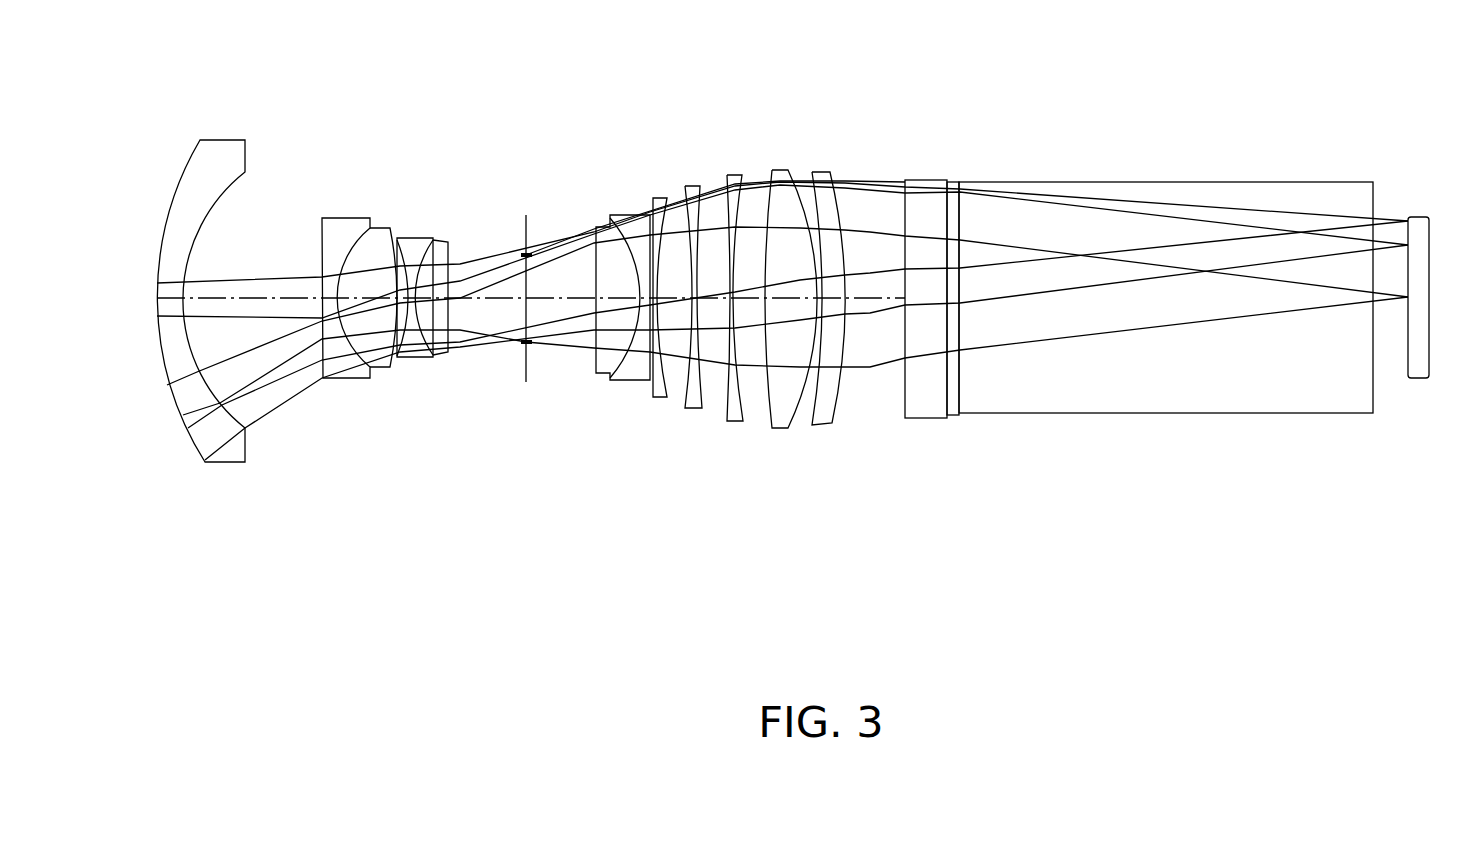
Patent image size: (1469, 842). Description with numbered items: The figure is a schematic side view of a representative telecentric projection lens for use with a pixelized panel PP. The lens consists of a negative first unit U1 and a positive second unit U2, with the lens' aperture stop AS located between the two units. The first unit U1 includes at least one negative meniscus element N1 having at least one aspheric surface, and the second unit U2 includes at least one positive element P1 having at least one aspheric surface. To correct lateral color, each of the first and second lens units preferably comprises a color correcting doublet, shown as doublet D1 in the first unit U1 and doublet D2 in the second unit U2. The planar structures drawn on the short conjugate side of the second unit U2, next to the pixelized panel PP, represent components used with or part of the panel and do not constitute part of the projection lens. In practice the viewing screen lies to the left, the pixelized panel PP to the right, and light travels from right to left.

The negative meniscus element N1 is at (213, 170).
The color correcting doublet D1 is at (396, 216).
The aperture stop AS is at (523, 233).
The color correcting doublet D2 is at (652, 198).
The positive element P1 is at (829, 168).
The pixelized panel PP is at (1440, 245).
The first unit U1 is at (470, 463).
The second unit U2 is at (860, 460).